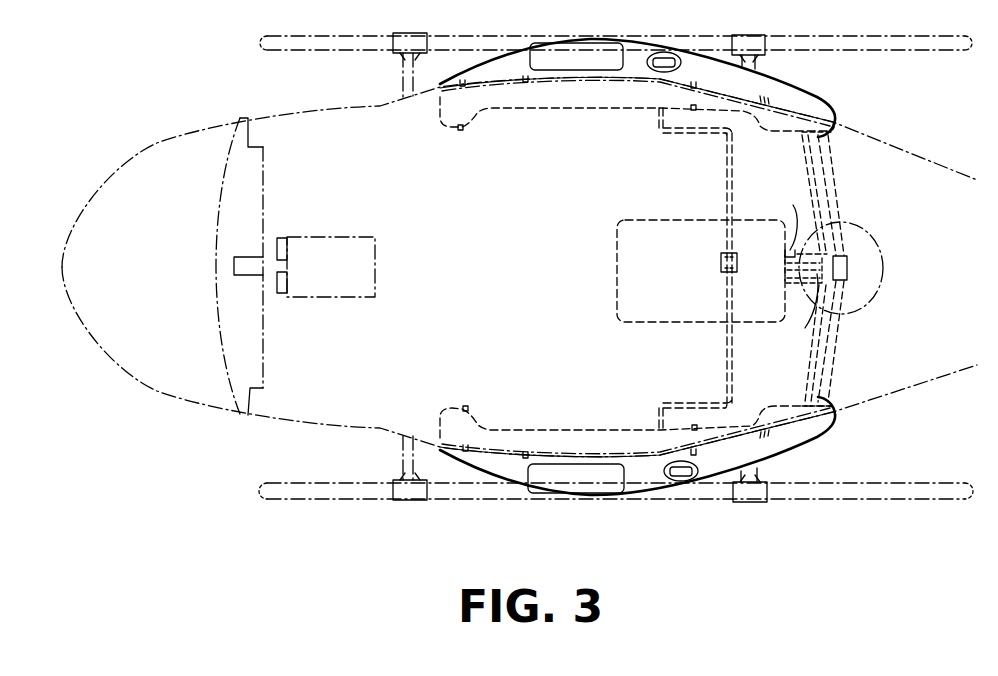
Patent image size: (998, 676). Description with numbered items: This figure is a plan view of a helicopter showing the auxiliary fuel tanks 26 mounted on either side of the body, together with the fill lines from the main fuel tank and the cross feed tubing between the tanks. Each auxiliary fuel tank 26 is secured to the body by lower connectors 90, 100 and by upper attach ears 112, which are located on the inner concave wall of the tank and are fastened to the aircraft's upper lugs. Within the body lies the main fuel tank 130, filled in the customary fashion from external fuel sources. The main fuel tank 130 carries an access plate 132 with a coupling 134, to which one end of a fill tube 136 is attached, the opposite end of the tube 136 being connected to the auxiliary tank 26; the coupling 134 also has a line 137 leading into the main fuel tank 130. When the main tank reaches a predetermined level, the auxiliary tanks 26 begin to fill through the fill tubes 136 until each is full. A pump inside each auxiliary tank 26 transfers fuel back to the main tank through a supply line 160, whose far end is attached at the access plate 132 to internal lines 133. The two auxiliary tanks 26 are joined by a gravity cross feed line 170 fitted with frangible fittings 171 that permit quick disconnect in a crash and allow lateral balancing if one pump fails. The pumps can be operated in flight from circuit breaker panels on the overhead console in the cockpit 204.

The auxiliary fuel tank 26 is at (816, 88).
The cockpit 204 is at (369, 218).
The supply line 160 is at (804, 163).
The tube 136 is at (838, 194).
The internal lines 133 is at (792, 221).
The frangible fittings 171 is at (737, 259).
The coupling 134 is at (847, 263).
The access plate 132 is at (882, 282).
The gravity cross feed line 170 is at (760, 301).
The line 137 is at (791, 313).
The main fuel tank 130 is at (681, 291).
The lower connector 100 is at (465, 406).
The lower connector 90 is at (695, 427).
The upper attach ears 112 is at (465, 452).